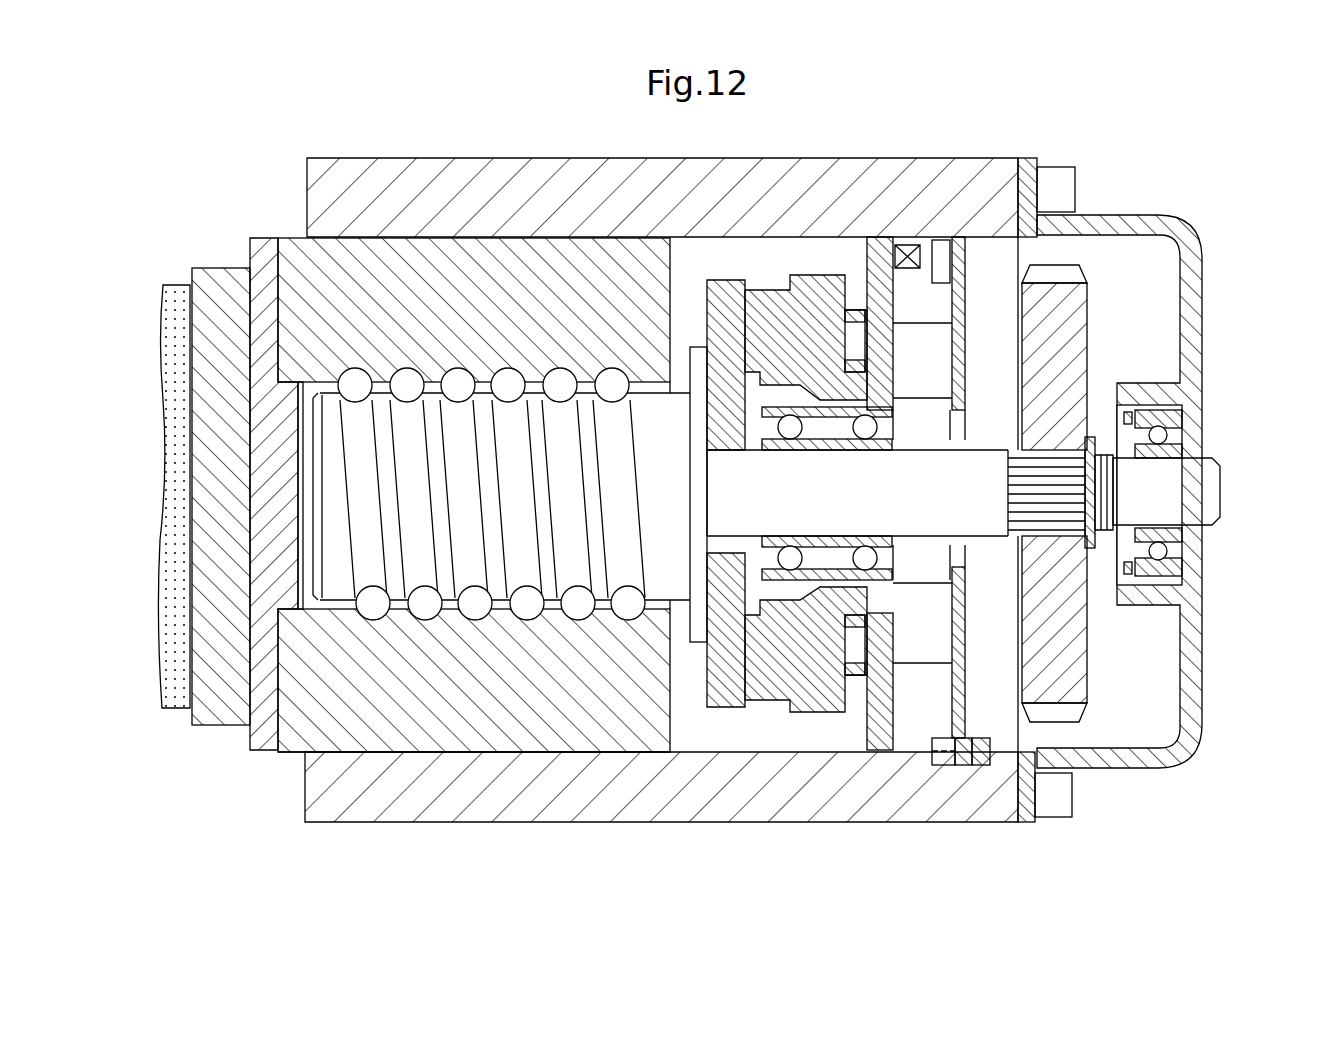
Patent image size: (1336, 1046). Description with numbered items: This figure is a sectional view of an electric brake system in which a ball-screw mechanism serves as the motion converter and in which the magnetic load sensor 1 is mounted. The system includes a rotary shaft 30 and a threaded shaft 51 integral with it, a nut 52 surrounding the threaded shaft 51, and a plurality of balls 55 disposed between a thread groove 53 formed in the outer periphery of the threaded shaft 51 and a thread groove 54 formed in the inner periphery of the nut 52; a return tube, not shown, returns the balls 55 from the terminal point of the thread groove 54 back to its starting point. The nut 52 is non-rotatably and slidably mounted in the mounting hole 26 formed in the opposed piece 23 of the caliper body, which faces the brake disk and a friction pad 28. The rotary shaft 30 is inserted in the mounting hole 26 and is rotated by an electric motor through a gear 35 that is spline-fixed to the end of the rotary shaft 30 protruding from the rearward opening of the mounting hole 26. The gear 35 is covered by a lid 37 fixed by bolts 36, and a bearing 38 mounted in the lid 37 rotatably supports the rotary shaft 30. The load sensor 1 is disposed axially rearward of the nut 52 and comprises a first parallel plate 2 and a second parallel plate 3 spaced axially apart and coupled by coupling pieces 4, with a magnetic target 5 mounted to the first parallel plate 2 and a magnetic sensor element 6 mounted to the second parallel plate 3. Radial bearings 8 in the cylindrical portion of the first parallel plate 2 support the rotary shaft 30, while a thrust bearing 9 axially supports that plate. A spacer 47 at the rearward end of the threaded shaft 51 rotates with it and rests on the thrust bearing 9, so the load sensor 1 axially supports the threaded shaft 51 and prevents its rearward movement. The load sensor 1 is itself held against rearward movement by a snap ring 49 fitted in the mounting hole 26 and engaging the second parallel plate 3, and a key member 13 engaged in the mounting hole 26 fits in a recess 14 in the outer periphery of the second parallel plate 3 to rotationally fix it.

The load sensor 1 is at (1126, 484).
The first parallel plate 2 is at (878, 300).
The second parallel plate 3 is at (960, 225).
The coupling pieces 4 is at (925, 337).
The magnetic target 5 is at (906, 252).
The magnetic sensor element 6 is at (942, 247).
The radial bearings 8 is at (848, 452).
The thrust bearing 9 is at (853, 317).
The key member 13 is at (940, 758).
The recess 14 is at (958, 742).
The opposed piece 23 is at (396, 806).
The mounting hole 26 is at (488, 742).
The friction pad 28 is at (180, 290).
The rotary shaft 30 is at (1222, 490).
The gear 35 is at (1095, 636).
The bolts 36 is at (1065, 188).
The lid 37 is at (1200, 692).
The bearing 38 is at (1163, 437).
The spacer 47 is at (770, 292).
The snap ring 49 is at (978, 758).
The threaded shaft 51 is at (660, 408).
The nut 52 is at (428, 250).
The thread groove 53 is at (612, 368).
The thread groove 54 is at (508, 368).
The balls 55 is at (407, 368).